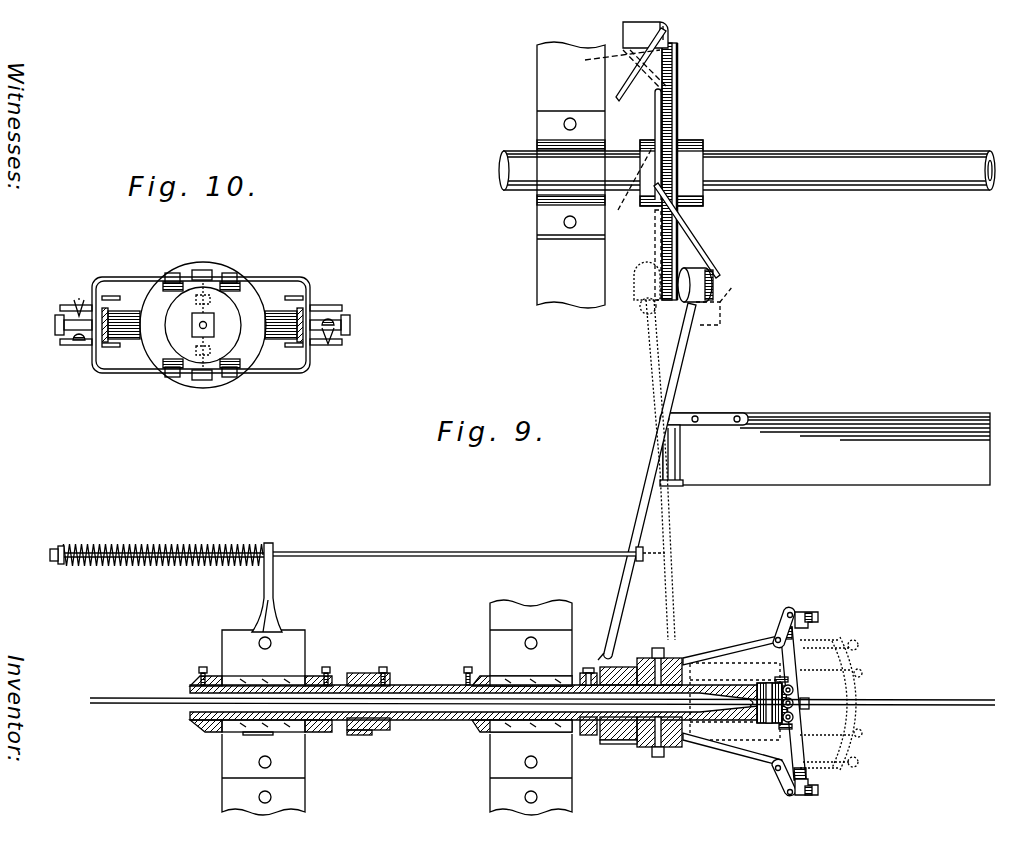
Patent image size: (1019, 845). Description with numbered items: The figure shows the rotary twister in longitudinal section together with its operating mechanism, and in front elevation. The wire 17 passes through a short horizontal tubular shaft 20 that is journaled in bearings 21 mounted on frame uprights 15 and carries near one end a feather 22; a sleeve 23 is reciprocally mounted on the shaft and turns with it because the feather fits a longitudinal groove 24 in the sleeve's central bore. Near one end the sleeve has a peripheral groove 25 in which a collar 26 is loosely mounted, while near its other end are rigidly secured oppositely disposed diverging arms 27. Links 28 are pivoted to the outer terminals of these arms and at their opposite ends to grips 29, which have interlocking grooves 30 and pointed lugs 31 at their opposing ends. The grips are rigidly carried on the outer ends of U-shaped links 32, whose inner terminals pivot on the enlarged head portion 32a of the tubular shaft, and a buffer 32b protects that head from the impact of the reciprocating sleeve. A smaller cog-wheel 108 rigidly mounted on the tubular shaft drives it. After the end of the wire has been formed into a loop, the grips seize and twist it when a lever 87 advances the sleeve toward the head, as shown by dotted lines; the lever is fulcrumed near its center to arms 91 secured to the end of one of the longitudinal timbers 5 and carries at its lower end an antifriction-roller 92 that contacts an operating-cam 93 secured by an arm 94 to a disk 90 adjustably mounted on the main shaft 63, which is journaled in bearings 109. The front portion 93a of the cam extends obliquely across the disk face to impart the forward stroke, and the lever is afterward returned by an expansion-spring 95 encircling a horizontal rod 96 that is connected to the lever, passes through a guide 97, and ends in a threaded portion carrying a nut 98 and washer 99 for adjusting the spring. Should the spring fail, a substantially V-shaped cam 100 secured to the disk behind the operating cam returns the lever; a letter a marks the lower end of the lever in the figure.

In FIG. 9, the longitudinal timber 5 is at (826, 449).
In FIG. 9, the bracket 15 is at (222, 798).
In FIG. 9, the wire 17 is at (143, 699).
In FIG. 9, the tubular shaft 20 is at (426, 684).
In FIG. 9, the bearings 21 is at (273, 676).
In FIG. 9, the feather 22 is at (714, 692).
In FIG. 9, the sleeve 23 is at (612, 742).
In FIG. 10, the sleeve 23 is at (205, 262).
In FIG. 9, the longitudinal groove 24 is at (681, 673).
In FIG. 9, the peripheral groove 25 is at (623, 745).
In FIG. 9, the collar 26 is at (646, 750).
In FIG. 9, the diverging arms 27 is at (735, 650).
In FIG. 10, the diverging arms 27 is at (127, 312).
In FIG. 9, the links 28 is at (778, 619).
In FIG. 10, the links 28 is at (62, 305).
In FIG. 9, the grips 29 is at (808, 632).
In FIG. 10, the grips 29 is at (55, 325).
In FIG. 9, the interlocking grooves 30 is at (810, 613).
In FIG. 10, the interlocking grooves 30 is at (79, 346).
In FIG. 9, the pointed lugs 31 is at (820, 617).
In FIG. 10, the pointed lugs 31 is at (79, 300).
In FIG. 9, the U-shaped links 32 is at (798, 665).
In FIG. 10, the U-shaped links 32 is at (112, 280).
In FIG. 9, the enlarged head portion 32a is at (795, 679).
In FIG. 10, the enlarged head portion 32a is at (189, 325).
In FIG. 9, the buffer 32b is at (760, 726).
In FIG. 9, the main shaft 63 is at (893, 151).
In FIG. 9, the lever 87 is at (665, 603).
In FIG. 9, the disk 90 is at (678, 127).
In FIG. 9, the arms 91 is at (715, 413).
In FIG. 9, the antifriction-roller 92 is at (650, 481).
In FIG. 9, the operating-cam 93 is at (675, 194).
In FIG. 9, the front portion of cam 93a is at (712, 269).
In FIG. 9, the arm 94 is at (665, 172).
In FIG. 9, the expansion-spring 95 is at (151, 545).
In FIG. 9, the horizontal rod 96 is at (466, 546).
In FIG. 9, the guide 97 is at (275, 589).
In FIG. 9, the nut 98 is at (53, 548).
In FIG. 9, the washer 99 is at (62, 546).
In FIG. 9, the V-shaped cam 100 is at (636, 72).
In FIG. 9, the cog-wheel 108 is at (366, 667).
In FIG. 9, the bearings 109 is at (571, 175).
In FIG. 9, the lever foot a is at (597, 646).